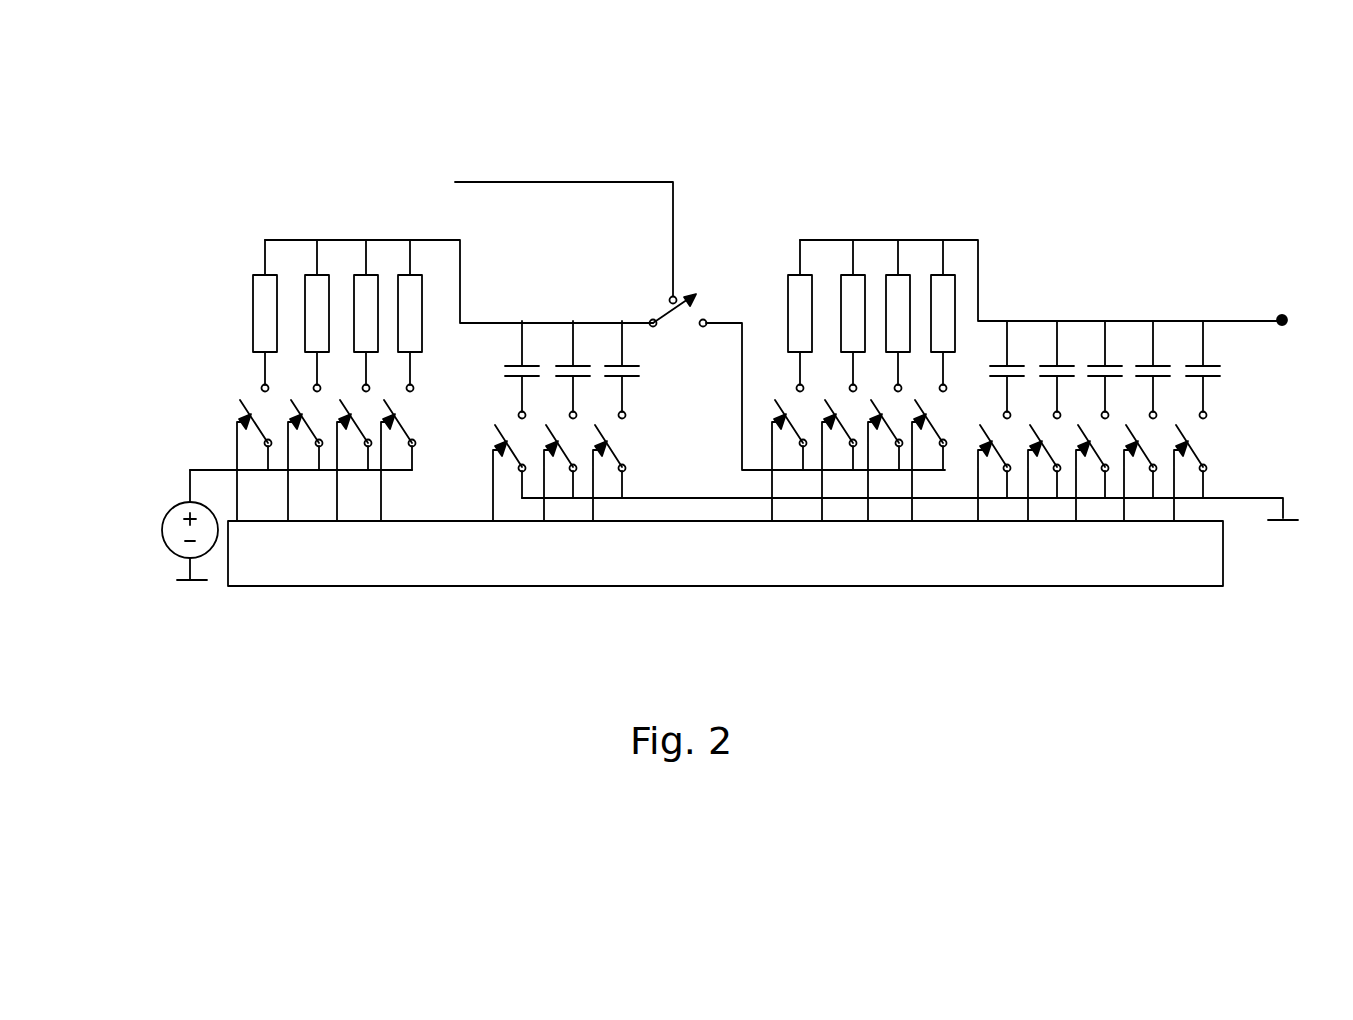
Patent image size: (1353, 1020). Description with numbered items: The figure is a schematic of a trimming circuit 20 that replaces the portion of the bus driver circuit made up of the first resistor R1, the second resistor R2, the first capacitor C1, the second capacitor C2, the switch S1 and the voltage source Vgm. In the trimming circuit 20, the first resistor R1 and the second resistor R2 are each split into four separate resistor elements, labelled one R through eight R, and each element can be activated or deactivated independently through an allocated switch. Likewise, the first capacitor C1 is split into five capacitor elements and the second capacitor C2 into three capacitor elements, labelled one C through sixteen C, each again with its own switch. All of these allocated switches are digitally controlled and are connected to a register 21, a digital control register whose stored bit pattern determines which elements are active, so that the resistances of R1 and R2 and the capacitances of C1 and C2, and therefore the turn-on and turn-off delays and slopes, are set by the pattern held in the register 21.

The trimming circuit 20 is at (178, 89).
The register 21 is at (427, 587).
The first resistor R1 is at (968, 180).
The second resistor R2 is at (442, 178).
The first capacitor C1 is at (1235, 272).
The second capacitor C2 is at (645, 275).
The switch S1 is at (700, 311).
The voltage source Vgm is at (155, 525).